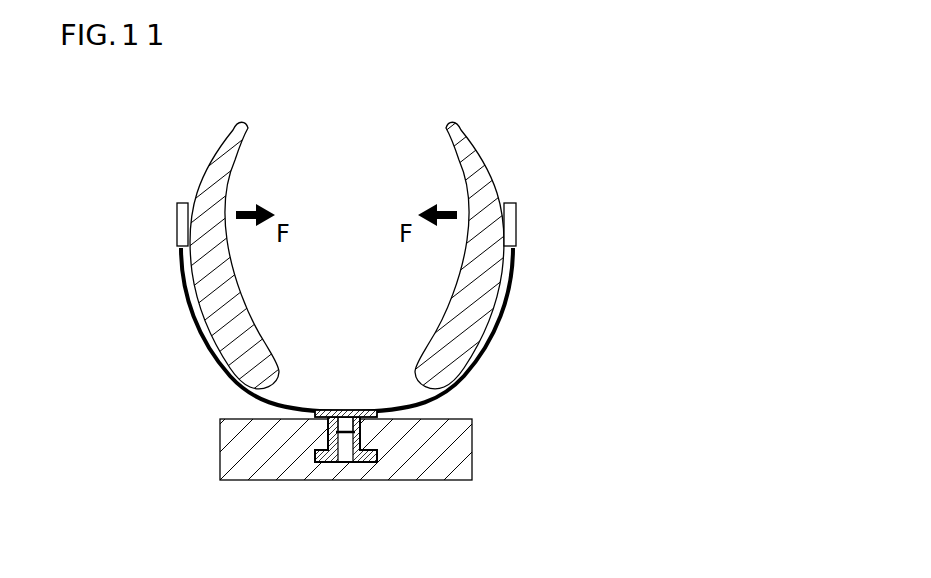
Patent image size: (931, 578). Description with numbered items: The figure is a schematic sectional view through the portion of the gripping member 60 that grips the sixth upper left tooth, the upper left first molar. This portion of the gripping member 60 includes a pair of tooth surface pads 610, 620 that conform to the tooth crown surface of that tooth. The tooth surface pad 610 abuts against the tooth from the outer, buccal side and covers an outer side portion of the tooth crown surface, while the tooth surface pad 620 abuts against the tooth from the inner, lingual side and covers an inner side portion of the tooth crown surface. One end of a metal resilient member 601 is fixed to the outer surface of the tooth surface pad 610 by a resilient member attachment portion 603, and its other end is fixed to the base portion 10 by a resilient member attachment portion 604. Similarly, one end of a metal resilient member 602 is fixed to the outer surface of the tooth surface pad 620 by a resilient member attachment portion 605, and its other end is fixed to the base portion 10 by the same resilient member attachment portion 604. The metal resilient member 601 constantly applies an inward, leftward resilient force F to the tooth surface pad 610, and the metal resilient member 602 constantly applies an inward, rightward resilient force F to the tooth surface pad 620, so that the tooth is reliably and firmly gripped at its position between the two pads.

The gripping member 60 is at (355, 106).
The metal resilient member 601 is at (500, 320).
The metal resilient member 602 is at (193, 316).
The resilient member attachment portion 603 is at (516, 223).
The resilient member attachment portion 604 is at (345, 410).
The resilient member attachment portion 605 is at (177, 223).
The tooth surface pad 610 is at (453, 159).
The tooth surface pad 620 is at (241, 159).
The base portion 10 is at (472, 458).